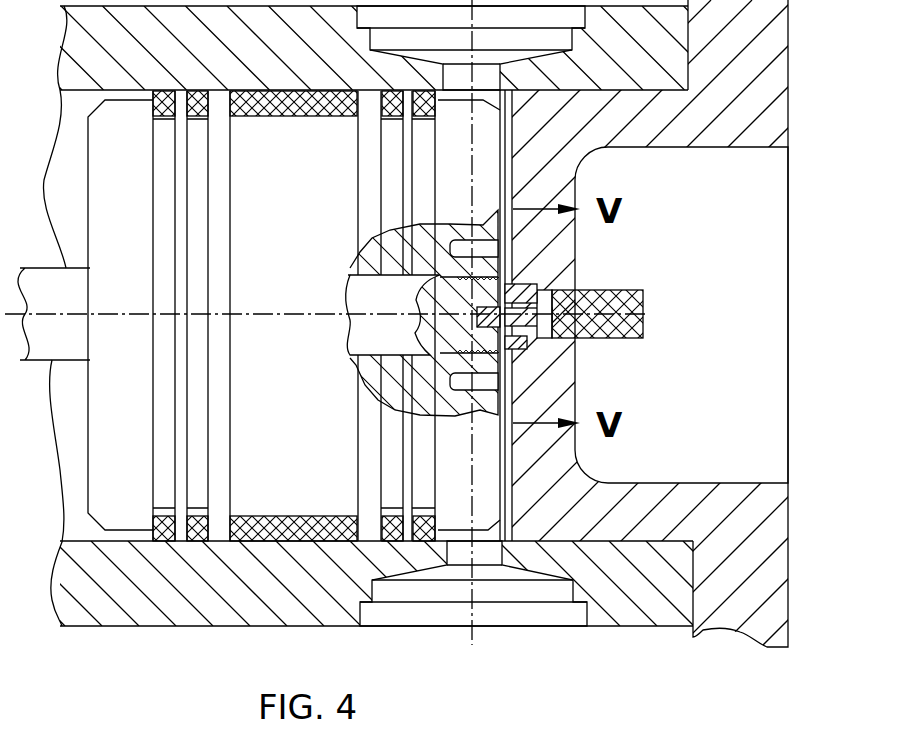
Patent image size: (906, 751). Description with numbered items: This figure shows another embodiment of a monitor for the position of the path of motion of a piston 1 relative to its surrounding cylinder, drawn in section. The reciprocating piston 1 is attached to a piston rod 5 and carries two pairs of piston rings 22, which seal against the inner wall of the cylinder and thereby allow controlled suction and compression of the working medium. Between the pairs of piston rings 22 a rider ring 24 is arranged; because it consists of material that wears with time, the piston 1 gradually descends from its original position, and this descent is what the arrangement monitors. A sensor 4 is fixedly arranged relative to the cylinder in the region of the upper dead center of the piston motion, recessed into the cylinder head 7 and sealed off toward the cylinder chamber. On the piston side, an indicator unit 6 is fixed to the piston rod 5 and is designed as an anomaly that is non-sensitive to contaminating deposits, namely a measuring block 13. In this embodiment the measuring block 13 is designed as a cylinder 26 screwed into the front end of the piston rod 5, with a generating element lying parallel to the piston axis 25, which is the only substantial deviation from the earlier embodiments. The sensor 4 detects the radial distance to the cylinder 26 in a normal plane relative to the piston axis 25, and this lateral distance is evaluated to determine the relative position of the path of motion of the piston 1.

The piston 1 is at (291, 200).
The sensor 4 is at (533, 290).
The piston rod 5 is at (373, 297).
The indicator unit 6 is at (490, 337).
The cylinder head 7 is at (585, 510).
The measuring block 13 is at (563, 340).
The piston rings 22 is at (200, 527).
The rider ring 24 is at (266, 528).
The piston axis 25 is at (277, 318).
The cylinder 26 is at (588, 288).